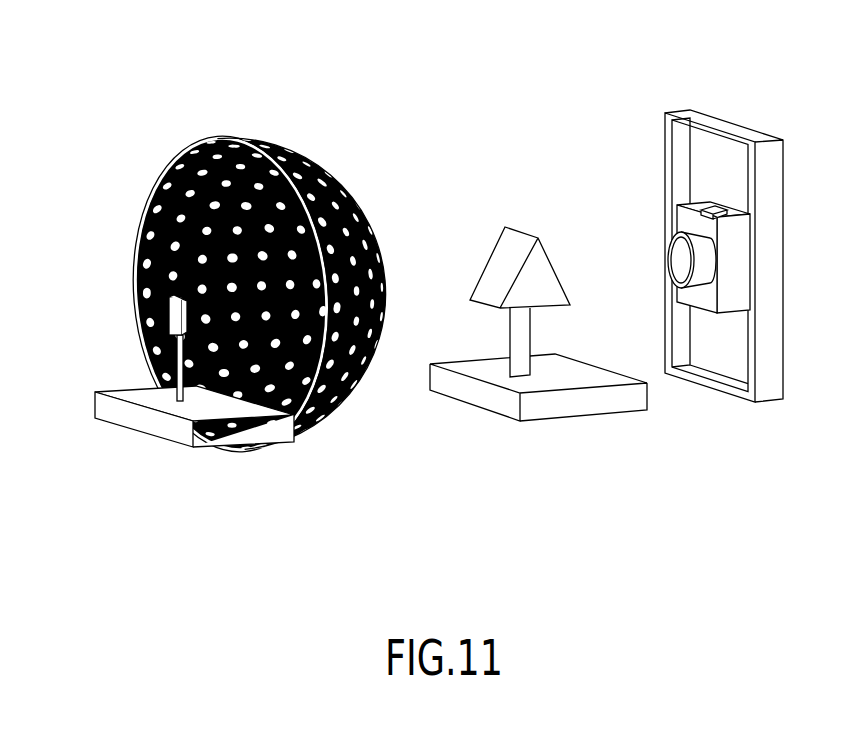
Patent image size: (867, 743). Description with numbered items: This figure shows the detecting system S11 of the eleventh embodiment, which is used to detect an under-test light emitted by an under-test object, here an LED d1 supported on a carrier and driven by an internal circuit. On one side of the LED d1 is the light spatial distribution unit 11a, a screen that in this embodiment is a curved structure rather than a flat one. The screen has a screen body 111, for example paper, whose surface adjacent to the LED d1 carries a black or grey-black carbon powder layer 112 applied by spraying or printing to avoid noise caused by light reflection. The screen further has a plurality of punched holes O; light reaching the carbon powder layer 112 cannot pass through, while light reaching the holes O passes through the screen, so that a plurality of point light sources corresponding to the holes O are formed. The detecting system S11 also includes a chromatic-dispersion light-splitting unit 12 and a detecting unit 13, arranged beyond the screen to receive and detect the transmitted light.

The detecting system S11 is at (232, 267).
The light spatial distribution unit 11a is at (243, 139).
The carbon powder layer 112 is at (259, 267).
The screen body 111 is at (251, 449).
The LED d1 is at (170, 315).
The holes O is at (358, 398).
The chromatic-dispersion light-splitting unit 12 is at (490, 270).
The detecting unit 13 is at (677, 260).